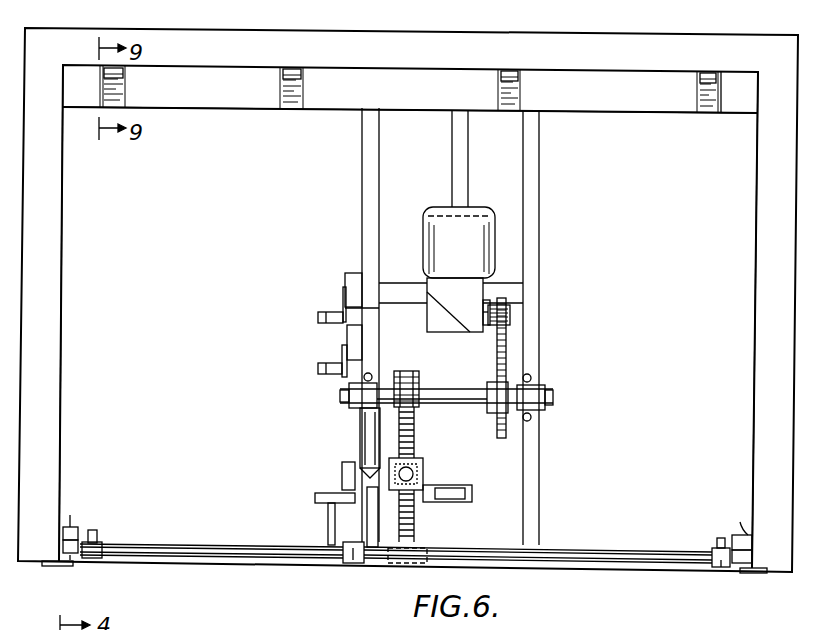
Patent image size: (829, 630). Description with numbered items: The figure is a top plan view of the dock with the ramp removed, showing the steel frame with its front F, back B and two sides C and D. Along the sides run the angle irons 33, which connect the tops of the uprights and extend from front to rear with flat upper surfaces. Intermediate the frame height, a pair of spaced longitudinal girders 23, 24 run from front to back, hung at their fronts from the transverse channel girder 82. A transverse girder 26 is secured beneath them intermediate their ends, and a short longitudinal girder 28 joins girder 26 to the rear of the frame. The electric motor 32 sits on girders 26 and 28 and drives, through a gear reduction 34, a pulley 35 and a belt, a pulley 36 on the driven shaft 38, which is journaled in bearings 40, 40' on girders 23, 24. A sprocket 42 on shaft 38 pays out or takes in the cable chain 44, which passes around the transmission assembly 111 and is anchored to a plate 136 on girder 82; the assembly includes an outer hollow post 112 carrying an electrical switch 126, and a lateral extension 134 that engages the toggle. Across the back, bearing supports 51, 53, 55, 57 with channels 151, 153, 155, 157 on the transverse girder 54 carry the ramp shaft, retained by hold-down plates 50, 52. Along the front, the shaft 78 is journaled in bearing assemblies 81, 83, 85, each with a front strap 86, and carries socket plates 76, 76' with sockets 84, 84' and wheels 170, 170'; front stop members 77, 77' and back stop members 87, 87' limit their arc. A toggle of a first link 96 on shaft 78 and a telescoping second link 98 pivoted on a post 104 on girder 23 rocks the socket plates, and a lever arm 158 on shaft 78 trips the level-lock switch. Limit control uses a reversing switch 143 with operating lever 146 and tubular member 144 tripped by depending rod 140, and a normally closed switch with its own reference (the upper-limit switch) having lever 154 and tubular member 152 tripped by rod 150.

The longitudinal girder 23 is at (365, 209).
The longitudinal girder 24 is at (540, 205).
The transverse girder 26 is at (408, 294).
The short longitudinal girder 28 is at (460, 168).
The electric motor 32 is at (432, 245).
The angle iron 33 is at (53, 371).
The gear reduction 34 is at (470, 346).
The pulley 35 is at (489, 325).
The pulley 36 is at (497, 432).
The driven shaft 38 is at (466, 394).
The bearing 40 is at (348, 398).
The bearing 40' is at (548, 389).
The sprocket 42 is at (414, 412).
The cable chain 44 is at (414, 510).
The hold-down plate 50 is at (100, 100).
The bearing support 51 is at (125, 98).
The hold-down plate 52 is at (721, 94).
The bearing support 53 is at (303, 100).
The transverse girder 54 is at (243, 100).
The bearing support 55 is at (520, 101).
The bearing support 57 is at (697, 104).
The socket plate 76 is at (51, 538).
The socket plate 76' is at (761, 550).
The front stop member 77 is at (57, 577).
The front stop member 77' is at (759, 589).
The shaft 78 is at (208, 542).
The bearing assembly 81 is at (100, 543).
The transverse channel girder 82 is at (592, 564).
The bearing assembly 83 is at (353, 563).
The socket 84 is at (52, 520).
The socket 84' is at (758, 535).
The bearing assembly 85 is at (715, 560).
The front strap 86 is at (362, 560).
The back stop member 87 is at (79, 506).
The back stop member 87' is at (734, 516).
The first link 96 is at (372, 524).
The second link 98 is at (368, 446).
The post 104 is at (368, 418).
The transmission assembly 111 is at (449, 478).
The outer hollow post 112 is at (418, 462).
The electrical switch 126 is at (472, 492).
The lateral extension 134 is at (390, 497).
The plate 136 is at (412, 542).
The depending rod 140 is at (318, 321).
The automatic reversing switch 143 is at (345, 280).
The tubular member 144 is at (318, 315).
The operating lever 146 is at (343, 298).
The depending rod 150 is at (328, 374).
The channel 151 is at (124, 80).
The tubular member 152 is at (318, 370).
The switch 153 is at (303, 82).
The switch operating lever 154 is at (342, 360).
The channel 155 is at (519, 82).
The channel 157 is at (697, 86).
The lever arm 158 is at (318, 506).
The wheel 170 is at (110, 517).
The wheel 170' is at (695, 534).
The back B is at (388, 36).
The side C is at (52, 307).
The side D is at (755, 315).
The front F is at (242, 562).